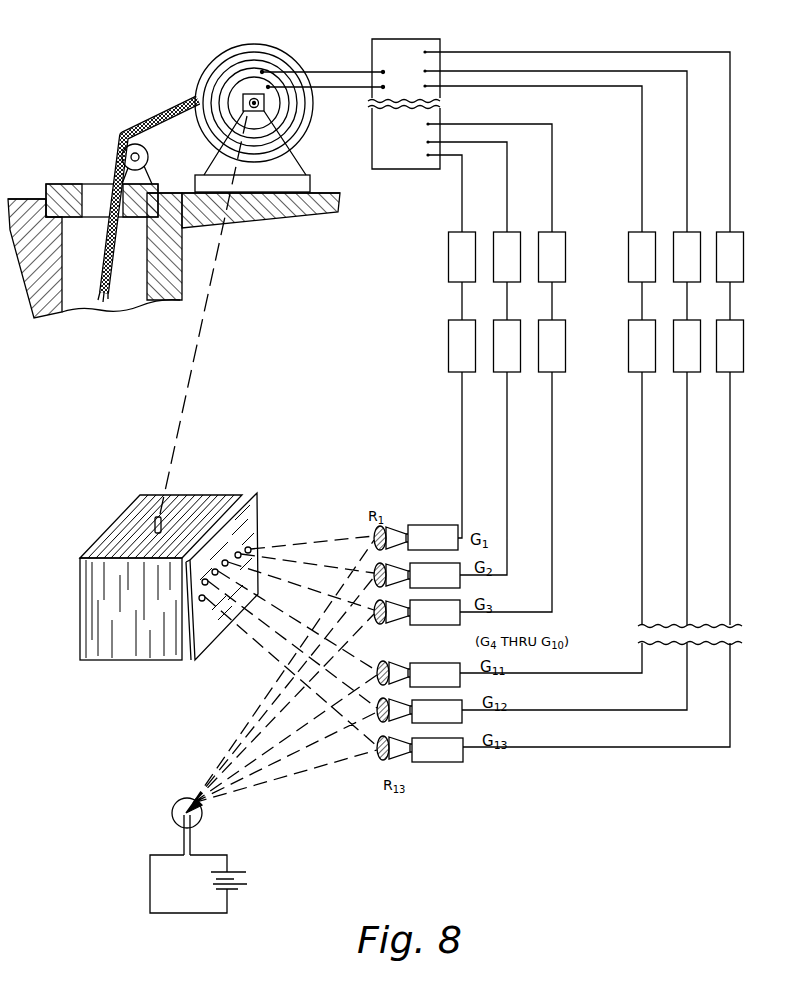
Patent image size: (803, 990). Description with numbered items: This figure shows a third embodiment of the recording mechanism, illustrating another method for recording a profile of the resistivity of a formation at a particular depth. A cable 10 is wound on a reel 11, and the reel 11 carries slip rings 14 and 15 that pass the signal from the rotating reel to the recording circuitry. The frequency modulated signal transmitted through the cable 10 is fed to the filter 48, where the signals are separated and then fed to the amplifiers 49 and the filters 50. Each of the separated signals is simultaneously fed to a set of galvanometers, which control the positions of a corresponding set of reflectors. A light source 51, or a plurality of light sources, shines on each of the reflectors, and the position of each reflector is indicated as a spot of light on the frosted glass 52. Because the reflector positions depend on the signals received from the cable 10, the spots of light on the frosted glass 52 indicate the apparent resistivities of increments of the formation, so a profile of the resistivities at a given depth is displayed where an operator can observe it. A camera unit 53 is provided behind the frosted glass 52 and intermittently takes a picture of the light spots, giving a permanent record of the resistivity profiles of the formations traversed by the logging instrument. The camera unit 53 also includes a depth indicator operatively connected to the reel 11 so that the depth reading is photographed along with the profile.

The cable 10 is at (125, 138).
The reel 11 is at (308, 128).
The slip ring 14 is at (250, 72).
The slip ring 15 is at (236, 88).
The filter 48 is at (397, 39).
The amplifiers 49 is at (724, 232).
The filters 50 is at (724, 372).
The light source 51 is at (172, 811).
The frosted glass 52 is at (248, 520).
The camera unit 53 is at (142, 662).